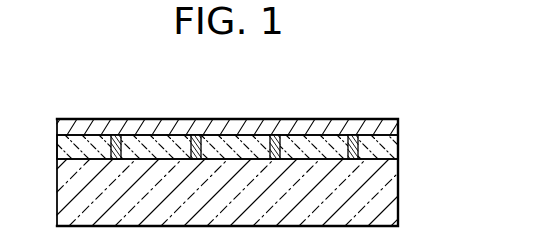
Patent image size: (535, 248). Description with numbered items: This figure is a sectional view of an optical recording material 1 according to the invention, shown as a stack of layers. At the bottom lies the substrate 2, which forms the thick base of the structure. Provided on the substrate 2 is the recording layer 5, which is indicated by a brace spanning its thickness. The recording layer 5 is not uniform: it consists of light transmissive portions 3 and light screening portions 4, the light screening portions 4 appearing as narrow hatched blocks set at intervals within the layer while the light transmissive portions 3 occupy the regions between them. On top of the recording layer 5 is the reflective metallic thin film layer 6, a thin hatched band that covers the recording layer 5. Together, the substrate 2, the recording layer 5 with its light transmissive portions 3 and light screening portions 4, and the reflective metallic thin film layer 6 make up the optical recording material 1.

The optical recording material 1 is at (100, 117).
The substrate 2 is at (388, 200).
The light transmissive portions 3 is at (309, 147).
The light screening portions 4 is at (360, 147).
The recording layer 5 is at (412, 137).
The reflective metallic thin film layer 6 is at (236, 125).